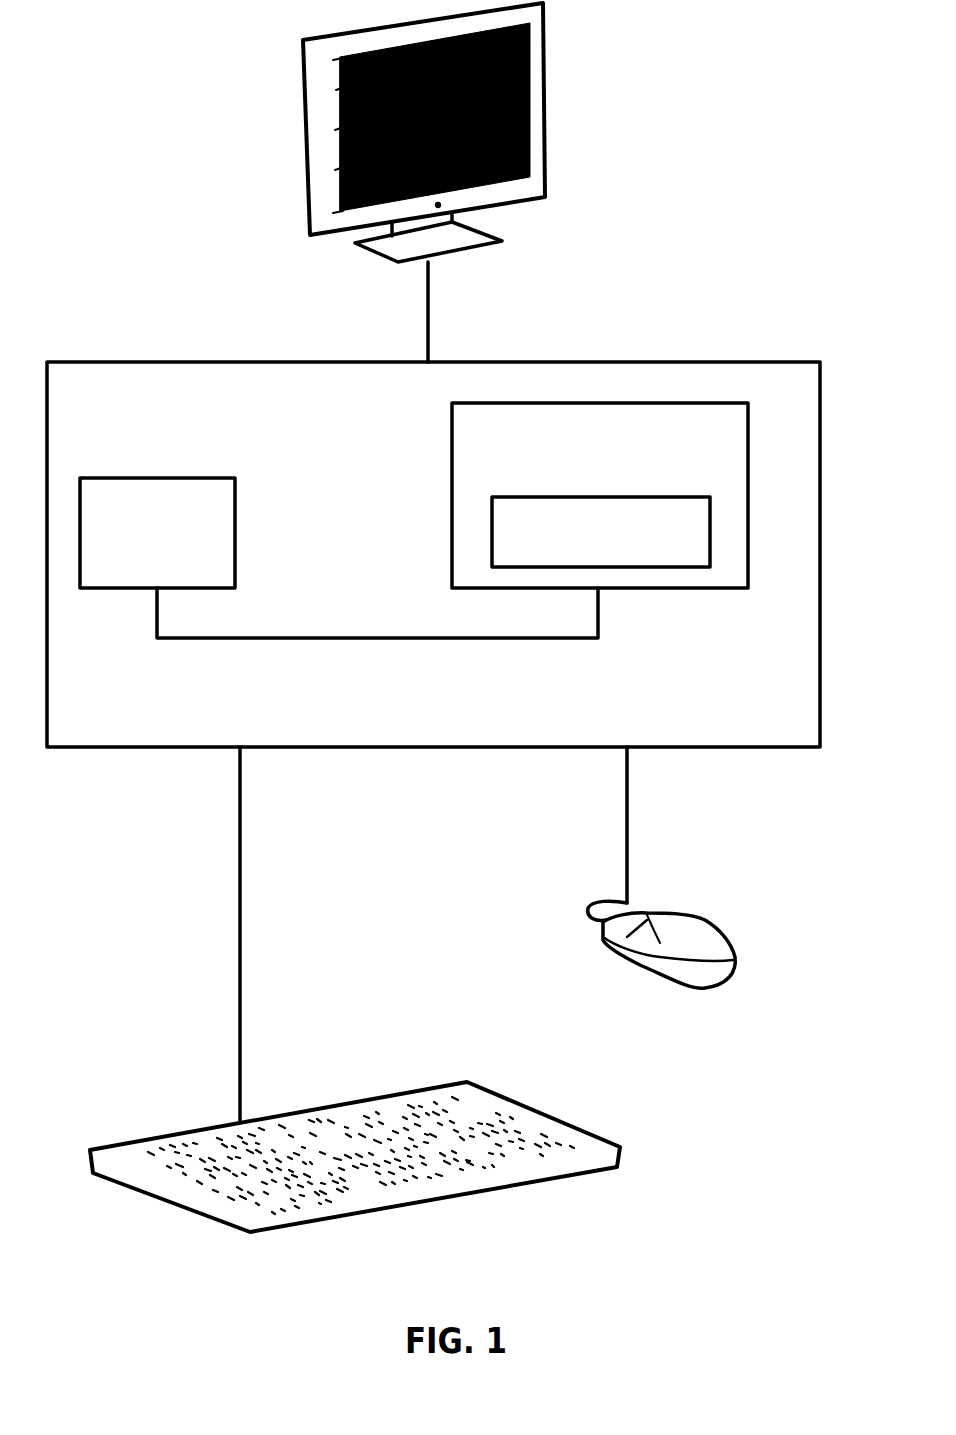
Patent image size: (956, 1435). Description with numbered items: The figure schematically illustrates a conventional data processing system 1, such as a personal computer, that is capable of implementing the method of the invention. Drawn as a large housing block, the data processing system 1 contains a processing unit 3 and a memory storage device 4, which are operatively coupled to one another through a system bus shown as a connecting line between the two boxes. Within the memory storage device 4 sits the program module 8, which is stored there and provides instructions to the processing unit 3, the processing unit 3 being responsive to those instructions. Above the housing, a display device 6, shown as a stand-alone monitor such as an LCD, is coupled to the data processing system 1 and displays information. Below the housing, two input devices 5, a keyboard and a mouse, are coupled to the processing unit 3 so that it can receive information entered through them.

The data processing system 1 is at (767, 90).
The processing unit 3 is at (157, 533).
The memory storage device 4 is at (600, 495).
The input device 5 is at (687, 913).
The display device 6 is at (543, 128).
The program module 8 is at (601, 532).